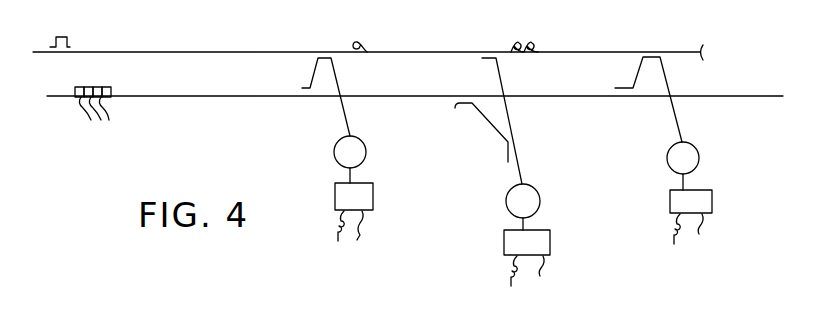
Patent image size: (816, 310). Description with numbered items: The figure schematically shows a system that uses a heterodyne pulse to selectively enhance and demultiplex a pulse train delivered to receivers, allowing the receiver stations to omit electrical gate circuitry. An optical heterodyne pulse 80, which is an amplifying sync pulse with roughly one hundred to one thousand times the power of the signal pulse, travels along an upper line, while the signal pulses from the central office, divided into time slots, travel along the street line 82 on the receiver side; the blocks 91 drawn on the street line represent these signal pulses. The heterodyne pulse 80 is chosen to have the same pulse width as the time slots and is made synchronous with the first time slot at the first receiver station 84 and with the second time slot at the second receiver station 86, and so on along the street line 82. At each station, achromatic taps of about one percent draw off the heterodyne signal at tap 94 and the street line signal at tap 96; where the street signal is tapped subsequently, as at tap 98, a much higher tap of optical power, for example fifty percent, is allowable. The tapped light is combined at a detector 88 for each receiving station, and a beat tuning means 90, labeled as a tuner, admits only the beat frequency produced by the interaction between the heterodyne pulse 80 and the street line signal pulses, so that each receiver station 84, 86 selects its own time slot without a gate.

The heterodyne pulse 80 is at (68, 43).
The street line 82 is at (195, 97).
The first receiver station 84 is at (498, 206).
The second receiver station 86 is at (490, 177).
The detector 88 is at (366, 149).
The beat tuning means 90 is at (502, 208).
The data signal blocks 91 is at (95, 117).
The optical tap 94 is at (323, 51).
The optical tap 96 is at (283, 97).
The subsequent tap 98 is at (514, 147).